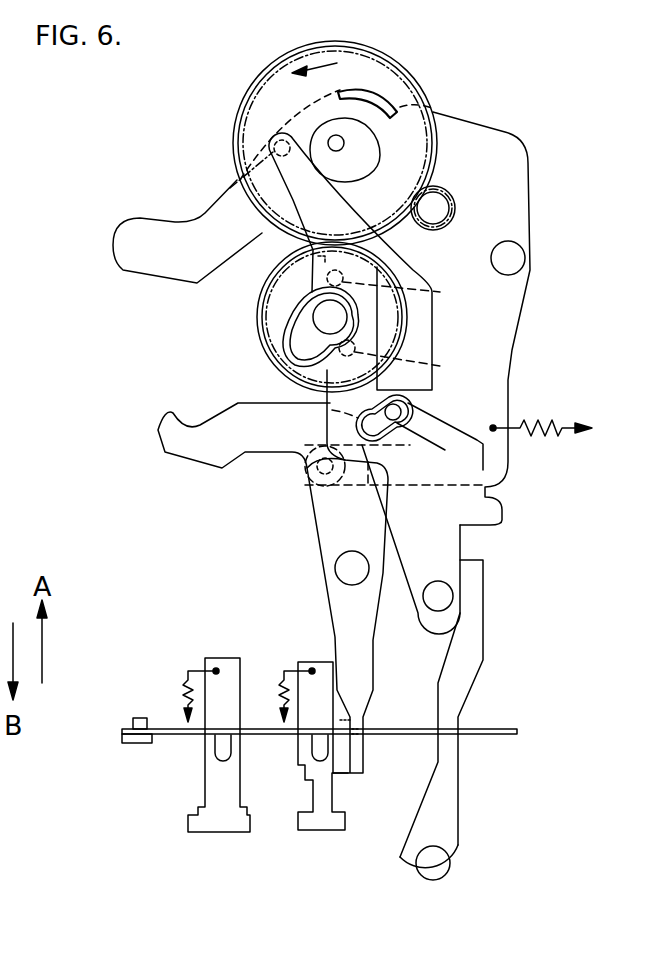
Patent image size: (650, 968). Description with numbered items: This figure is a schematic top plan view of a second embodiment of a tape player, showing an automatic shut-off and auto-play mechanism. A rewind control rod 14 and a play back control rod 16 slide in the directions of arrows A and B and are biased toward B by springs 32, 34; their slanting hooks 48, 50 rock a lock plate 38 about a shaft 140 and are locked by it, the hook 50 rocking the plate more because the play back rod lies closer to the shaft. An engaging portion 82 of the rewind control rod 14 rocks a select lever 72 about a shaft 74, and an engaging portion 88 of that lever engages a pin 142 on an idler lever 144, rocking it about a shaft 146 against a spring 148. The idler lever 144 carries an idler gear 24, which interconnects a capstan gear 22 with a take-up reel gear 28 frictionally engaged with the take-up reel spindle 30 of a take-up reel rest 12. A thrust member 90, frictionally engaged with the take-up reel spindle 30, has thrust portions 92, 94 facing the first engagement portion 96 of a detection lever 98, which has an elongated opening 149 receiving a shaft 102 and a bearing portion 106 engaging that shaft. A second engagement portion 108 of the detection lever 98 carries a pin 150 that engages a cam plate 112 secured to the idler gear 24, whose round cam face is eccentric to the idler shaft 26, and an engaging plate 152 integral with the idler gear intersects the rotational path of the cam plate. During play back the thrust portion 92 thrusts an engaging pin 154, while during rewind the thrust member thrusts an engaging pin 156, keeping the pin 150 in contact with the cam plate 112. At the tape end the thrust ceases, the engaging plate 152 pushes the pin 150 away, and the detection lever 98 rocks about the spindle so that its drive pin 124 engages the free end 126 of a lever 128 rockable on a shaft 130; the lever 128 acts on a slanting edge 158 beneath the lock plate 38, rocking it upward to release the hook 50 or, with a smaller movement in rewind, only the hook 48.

The take-up reel rest 12 is at (267, 358).
The rewind control rod 14 is at (322, 828).
The play back control rod 16 is at (237, 828).
The capstan gear 22 is at (447, 230).
The idler gear 24 is at (250, 96).
The idler shaft 26 is at (341, 149).
The take-up reel gear 28 is at (395, 326).
The take-up reel spindle 30 is at (320, 320).
The spring 32 is at (292, 690).
The spring 34 is at (183, 690).
The lock plate 38 is at (410, 736).
The slanting hook 48 is at (305, 750).
The slanting hook 50 is at (212, 750).
The select lever 72 is at (375, 612).
The shaft 74 is at (352, 562).
The engaging portion 82 is at (358, 719).
The engaging portion 88 is at (353, 487).
The thrust member 90 is at (285, 300).
The thrust portion 92 is at (262, 234).
The thrust portion 94 is at (318, 408).
The first engagement portion 96 is at (370, 313).
The detection lever 98 is at (460, 438).
The shaft 102 is at (438, 452).
The bearing portion 106 is at (432, 392).
The second engagement portion 108 is at (303, 187).
The cam plate 112 is at (368, 141).
The drive pin 124 is at (438, 582).
The free end 126 is at (472, 597).
The lever 128 is at (463, 667).
The shaft 130 is at (438, 876).
The shaft 140 is at (136, 718).
The pin 142 is at (316, 470).
The idler lever 144 is at (508, 372).
The shaft 146 is at (508, 270).
The spring 148 is at (537, 438).
The elongated opening 149 is at (394, 430).
The pin 150 is at (274, 150).
The engaging plate 152 is at (377, 88).
The engaging pin 154 is at (404, 290).
The engaging pin 156 is at (410, 358).
The slanting edge 158 is at (468, 737).